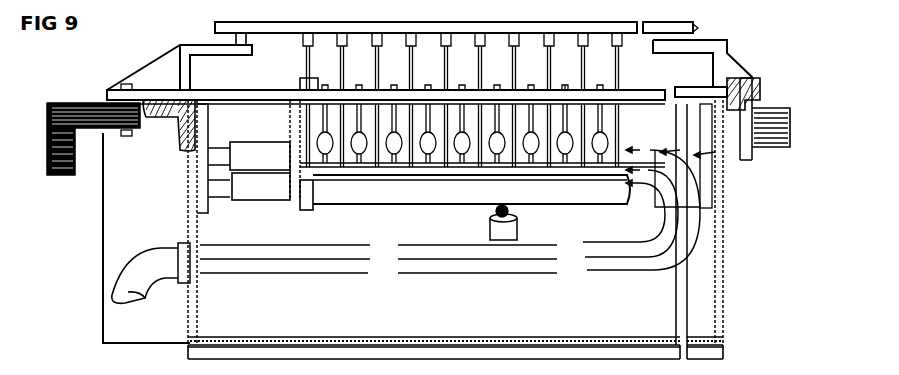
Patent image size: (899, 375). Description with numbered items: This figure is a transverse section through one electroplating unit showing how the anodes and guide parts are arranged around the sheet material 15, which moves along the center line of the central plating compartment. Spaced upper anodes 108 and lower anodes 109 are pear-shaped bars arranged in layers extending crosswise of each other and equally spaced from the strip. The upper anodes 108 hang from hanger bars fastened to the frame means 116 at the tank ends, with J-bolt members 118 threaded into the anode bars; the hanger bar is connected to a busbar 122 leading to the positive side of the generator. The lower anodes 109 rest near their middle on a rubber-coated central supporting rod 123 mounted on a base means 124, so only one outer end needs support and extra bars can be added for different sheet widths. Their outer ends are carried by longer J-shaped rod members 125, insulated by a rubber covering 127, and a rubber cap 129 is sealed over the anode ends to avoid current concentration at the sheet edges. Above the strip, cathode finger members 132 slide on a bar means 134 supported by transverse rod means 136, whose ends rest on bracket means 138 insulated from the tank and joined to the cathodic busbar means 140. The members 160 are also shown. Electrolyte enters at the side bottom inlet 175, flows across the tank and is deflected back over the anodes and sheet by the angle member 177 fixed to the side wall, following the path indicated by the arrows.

The sheet material 15 is at (428, 168).
The upper anodes 108 is at (462, 152).
The lower anodes 109 is at (590, 193).
The frame means 116 is at (560, 93).
The J-bolt members 118 is at (497, 85).
The busbar 122 is at (770, 138).
The central supporting rod 123 is at (508, 211).
The base means 124 is at (517, 231).
The J-shaped rod members 125 is at (300, 78).
The rubber covering 127 is at (292, 183).
The rubber cap 129 is at (313, 208).
The cathode finger members 132 is at (372, 72).
The bar means 134 is at (327, 27).
The transverse rod means 136 is at (242, 33).
The bracket means 138 is at (190, 45).
The busbar means 140 is at (73, 103).
The housing block 160 is at (243, 152).
The electrolyte inlet 175 is at (200, 271).
The angle member 177 is at (710, 182).